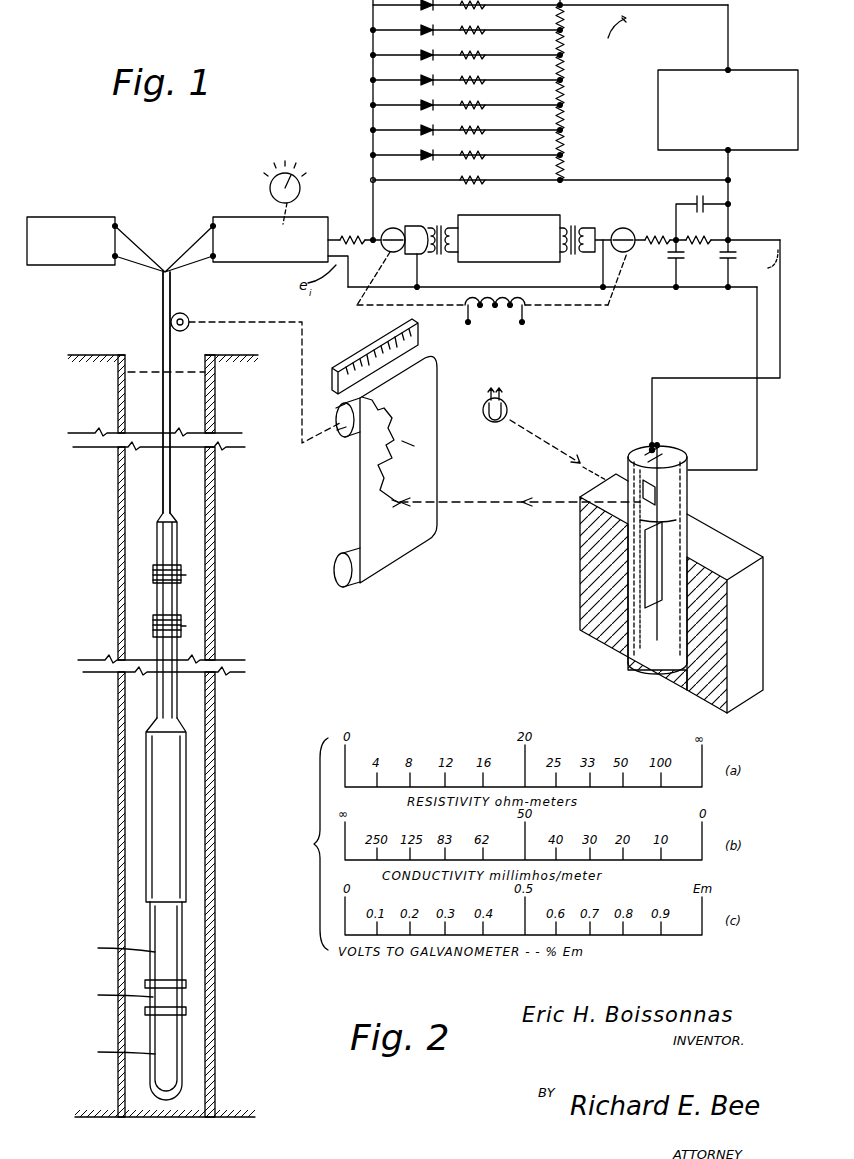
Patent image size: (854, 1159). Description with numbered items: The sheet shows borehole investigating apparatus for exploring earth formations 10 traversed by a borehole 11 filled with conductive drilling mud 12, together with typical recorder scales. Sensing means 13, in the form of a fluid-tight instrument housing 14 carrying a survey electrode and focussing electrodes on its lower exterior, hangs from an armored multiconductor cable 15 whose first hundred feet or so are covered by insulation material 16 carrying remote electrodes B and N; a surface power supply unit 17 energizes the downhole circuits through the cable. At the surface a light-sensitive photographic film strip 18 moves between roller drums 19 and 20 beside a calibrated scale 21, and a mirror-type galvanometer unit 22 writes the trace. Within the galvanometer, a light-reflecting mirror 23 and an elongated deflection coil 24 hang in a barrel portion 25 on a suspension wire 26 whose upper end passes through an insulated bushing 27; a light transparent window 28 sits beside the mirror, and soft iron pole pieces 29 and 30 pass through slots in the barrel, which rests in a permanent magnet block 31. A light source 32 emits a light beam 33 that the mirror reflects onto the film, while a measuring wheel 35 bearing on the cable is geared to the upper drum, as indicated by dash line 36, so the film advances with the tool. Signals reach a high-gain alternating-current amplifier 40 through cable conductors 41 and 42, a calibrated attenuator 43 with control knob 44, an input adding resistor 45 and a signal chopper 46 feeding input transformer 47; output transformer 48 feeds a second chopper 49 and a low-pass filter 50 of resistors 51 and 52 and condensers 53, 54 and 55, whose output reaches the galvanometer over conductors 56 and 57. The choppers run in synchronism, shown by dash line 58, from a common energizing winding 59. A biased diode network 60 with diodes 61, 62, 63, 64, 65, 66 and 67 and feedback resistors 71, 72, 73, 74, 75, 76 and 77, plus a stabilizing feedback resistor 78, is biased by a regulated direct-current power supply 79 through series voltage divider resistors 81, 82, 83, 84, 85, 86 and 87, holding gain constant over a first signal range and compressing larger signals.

The earth formations 10 is at (168, 736).
The borehole 11 is at (206, 520).
The conductive liquid or drilling mud 12 is at (166, 390).
The sensing means 13 is at (138, 860).
The instrument housing 14 is at (150, 775).
The armored multiconductor cable 15 is at (162, 476).
The insulation material 16 is at (157, 598).
The power supply unit 17 is at (70, 217).
The photographic film strip 18 is at (360, 504).
The roller drum 19 is at (343, 435).
The roller drum 20 is at (334, 574).
The calibrated scale 21 is at (376, 342).
The mirror-type galvanometer unit 22 is at (696, 493).
The light-reflecting mirror 23 is at (662, 508).
The deflection coil 24 is at (662, 566).
The barrel portion 25 is at (634, 456).
The suspension wire 26 is at (664, 524).
The electrically insulated bushing 27 is at (659, 450).
The light transparent window 28 is at (628, 490).
The soft iron pole piece 29 is at (598, 594).
The soft iron pole piece 30 is at (666, 620).
The permanent magnet block 31 is at (590, 566).
The light source 32 is at (510, 410).
The light beam 33 is at (534, 450).
The mechanical measuring wheel 35 is at (190, 320).
The gearing 36 is at (268, 322).
The alternating-current amplifier 40 is at (472, 264).
The cable conductor 41 is at (198, 229).
The cable conductor 42 is at (184, 262).
The calibrated attenuator 43 is at (320, 217).
The adjustable control knob 44 is at (269, 188).
The input adding resistor 45 is at (354, 236).
The signal chopper or vibrator unit 46 is at (393, 228).
The input transformer 47 is at (436, 226).
The output transformer 48 is at (578, 222).
The signal chopper or vibrator unit 49 is at (623, 228).
The low-pass filter 50 is at (703, 248).
The resistor 51 is at (650, 248).
The resistor 52 is at (712, 231).
The condenser 53 is at (670, 257).
The condenser 54 is at (721, 284).
The condenser 55 is at (690, 202).
The conductor 56 is at (780, 310).
The conductor 57 is at (756, 318).
The synchronizing connection 58 is at (566, 316).
The common energizing winding 59 is at (496, 320).
The biased diode network 60 is at (527, 120).
The diode 61 is at (418, 159).
The diode 62 is at (418, 134).
The diode 63 is at (418, 109).
The diode 64 is at (418, 84).
The diode 65 is at (418, 59).
The diode 66 is at (418, 34).
The diode 67 is at (418, 9).
The feedback resistor 71 is at (474, 160).
The feedback resistor 72 is at (474, 135).
The feedback resistor 73 is at (474, 110).
The feedback resistor 74 is at (474, 85).
The feedback resistor 75 is at (474, 60).
The feedback resistor 76 is at (474, 35).
The feedback resistor 77 is at (474, 10).
The feedback resistor 78 is at (474, 185).
The regulated direct-current power supply 79 is at (682, 70).
The voltage divider resistor 81 is at (565, 168).
The voltage divider resistor 82 is at (565, 139).
The voltage divider resistor 83 is at (565, 114).
The voltage divider resistor 84 is at (565, 89).
The voltage divider resistor 85 is at (565, 64).
The voltage divider resistor 86 is at (557, 35).
The voltage divider resistor 87 is at (557, 10).